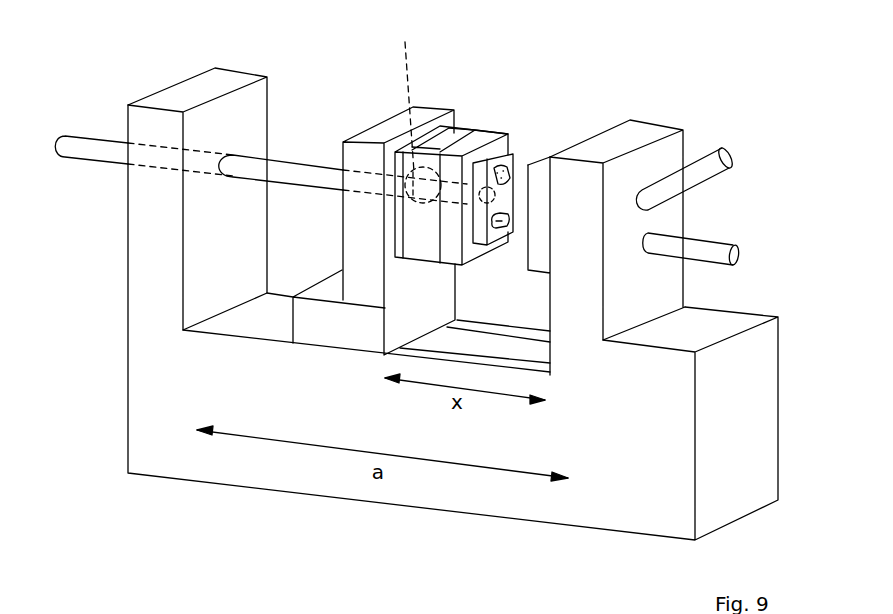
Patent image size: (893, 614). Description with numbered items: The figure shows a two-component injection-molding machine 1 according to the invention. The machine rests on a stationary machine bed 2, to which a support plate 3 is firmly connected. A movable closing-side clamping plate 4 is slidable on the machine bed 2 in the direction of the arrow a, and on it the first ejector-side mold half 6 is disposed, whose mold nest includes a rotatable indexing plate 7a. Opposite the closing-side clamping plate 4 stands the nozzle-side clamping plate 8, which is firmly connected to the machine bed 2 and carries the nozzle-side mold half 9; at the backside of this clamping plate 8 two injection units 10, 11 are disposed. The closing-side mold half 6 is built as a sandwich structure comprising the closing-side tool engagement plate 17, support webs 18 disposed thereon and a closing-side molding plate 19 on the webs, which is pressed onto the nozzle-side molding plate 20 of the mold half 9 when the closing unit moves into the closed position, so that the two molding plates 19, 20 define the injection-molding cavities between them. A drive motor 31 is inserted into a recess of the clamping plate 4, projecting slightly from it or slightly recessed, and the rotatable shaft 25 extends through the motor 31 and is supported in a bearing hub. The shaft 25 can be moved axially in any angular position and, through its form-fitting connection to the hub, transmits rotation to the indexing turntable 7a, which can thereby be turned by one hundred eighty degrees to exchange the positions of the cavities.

The injection-molding machine 1 is at (217, 513).
The machine bed 2 is at (445, 503).
The support plate 3 is at (222, 83).
The movable clamping plate 4 is at (378, 133).
The first ejector-side mold half 6 is at (462, 270).
The rotatable indexing plate 7a is at (530, 130).
The nozzle-side clamping plate 8 is at (638, 125).
The nozzle-side mold half 9 is at (528, 276).
The injection unit 10 is at (702, 168).
The injection unit 11 is at (723, 248).
The closing-side tool engagement plate 17 is at (442, 128).
The support webs 18 is at (462, 130).
The closing-side molding plate 19 is at (487, 138).
The nozzle-side molding plate 20 is at (538, 192).
The rotatable shaft 25 is at (310, 173).
The drive motor 31 is at (404, 95).